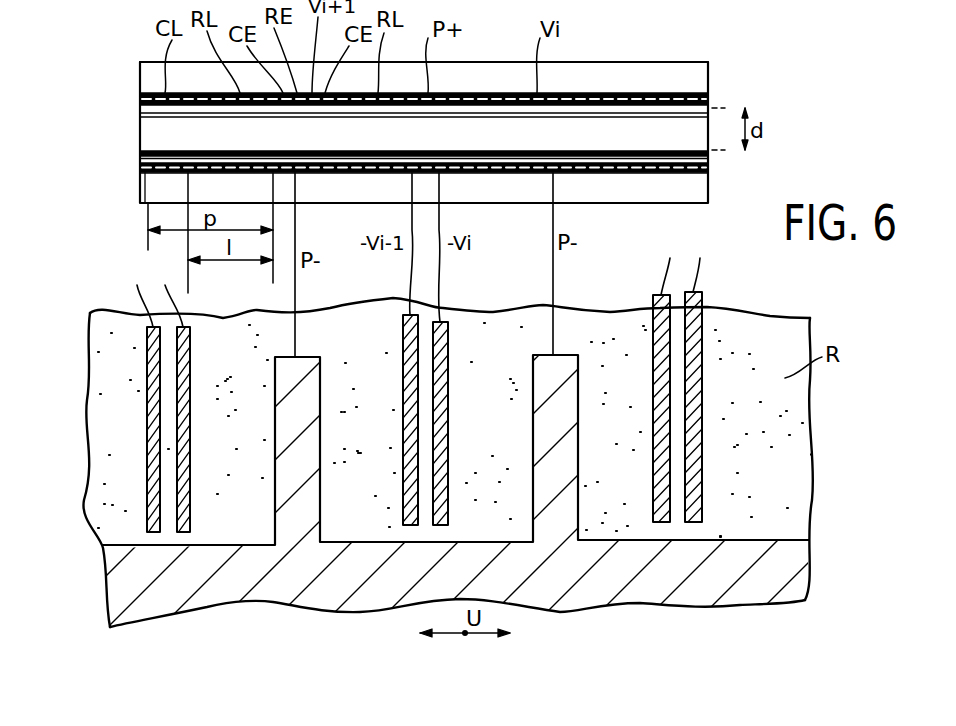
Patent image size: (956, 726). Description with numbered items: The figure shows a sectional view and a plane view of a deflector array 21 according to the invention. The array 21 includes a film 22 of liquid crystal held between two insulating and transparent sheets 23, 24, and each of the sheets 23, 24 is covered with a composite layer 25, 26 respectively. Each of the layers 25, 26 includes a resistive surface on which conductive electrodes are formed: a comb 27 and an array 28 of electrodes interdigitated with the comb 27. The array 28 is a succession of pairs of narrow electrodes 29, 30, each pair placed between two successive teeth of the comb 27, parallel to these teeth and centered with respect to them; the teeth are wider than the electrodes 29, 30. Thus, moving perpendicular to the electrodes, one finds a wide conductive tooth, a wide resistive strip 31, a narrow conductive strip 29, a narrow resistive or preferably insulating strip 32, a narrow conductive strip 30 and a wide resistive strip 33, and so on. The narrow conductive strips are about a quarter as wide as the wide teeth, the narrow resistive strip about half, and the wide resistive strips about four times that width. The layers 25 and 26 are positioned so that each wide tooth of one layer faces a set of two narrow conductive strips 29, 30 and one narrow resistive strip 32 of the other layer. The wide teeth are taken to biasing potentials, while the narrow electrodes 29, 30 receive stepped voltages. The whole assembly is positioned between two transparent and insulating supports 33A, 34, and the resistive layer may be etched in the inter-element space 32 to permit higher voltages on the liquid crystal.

The array 21 is at (697, 46).
The film of liquid crystal 22 is at (160, 136).
The insulating and transparent sheet 23 is at (140, 105).
The insulating and transparent sheet 24 is at (140, 155).
The composite layer 25 is at (140, 96).
The composite layer 26 is at (140, 169).
The comb 27 is at (633, 587).
The array of electrodes 28 is at (703, 302).
The narrow electrode 29 is at (147, 372).
The narrow electrode 30 is at (190, 439).
The wide resistive strip 31 is at (372, 512).
The narrow resistive strip 32 is at (430, 436).
The wide resistive strip 33 is at (517, 325).
The transparent and insulating support 33A is at (150, 74).
The transparent and insulating support 34 is at (152, 188).